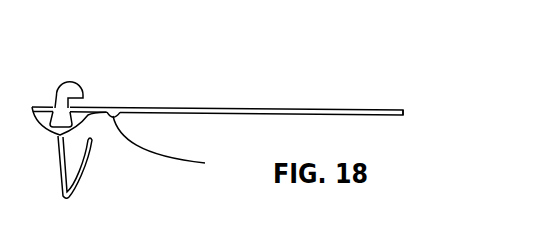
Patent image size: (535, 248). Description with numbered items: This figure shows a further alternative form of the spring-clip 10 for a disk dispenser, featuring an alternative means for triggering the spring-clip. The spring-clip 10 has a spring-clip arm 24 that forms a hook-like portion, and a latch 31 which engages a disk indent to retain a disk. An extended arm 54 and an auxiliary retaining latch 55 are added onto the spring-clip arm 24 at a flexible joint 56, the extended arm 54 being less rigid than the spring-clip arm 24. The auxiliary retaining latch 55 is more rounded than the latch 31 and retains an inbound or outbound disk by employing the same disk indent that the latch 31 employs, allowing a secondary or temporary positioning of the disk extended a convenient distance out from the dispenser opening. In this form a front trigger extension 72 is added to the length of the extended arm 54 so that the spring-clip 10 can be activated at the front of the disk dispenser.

The spring-clip 10 is at (112, 153).
The spring-clip arm 24 is at (98, 108).
The latch 31 is at (170, 146).
The extended arm 54 is at (155, 108).
The auxiliary retaining latch 55 is at (178, 114).
The flexible joint 56 is at (122, 108).
The front trigger extension 72 is at (405, 112).